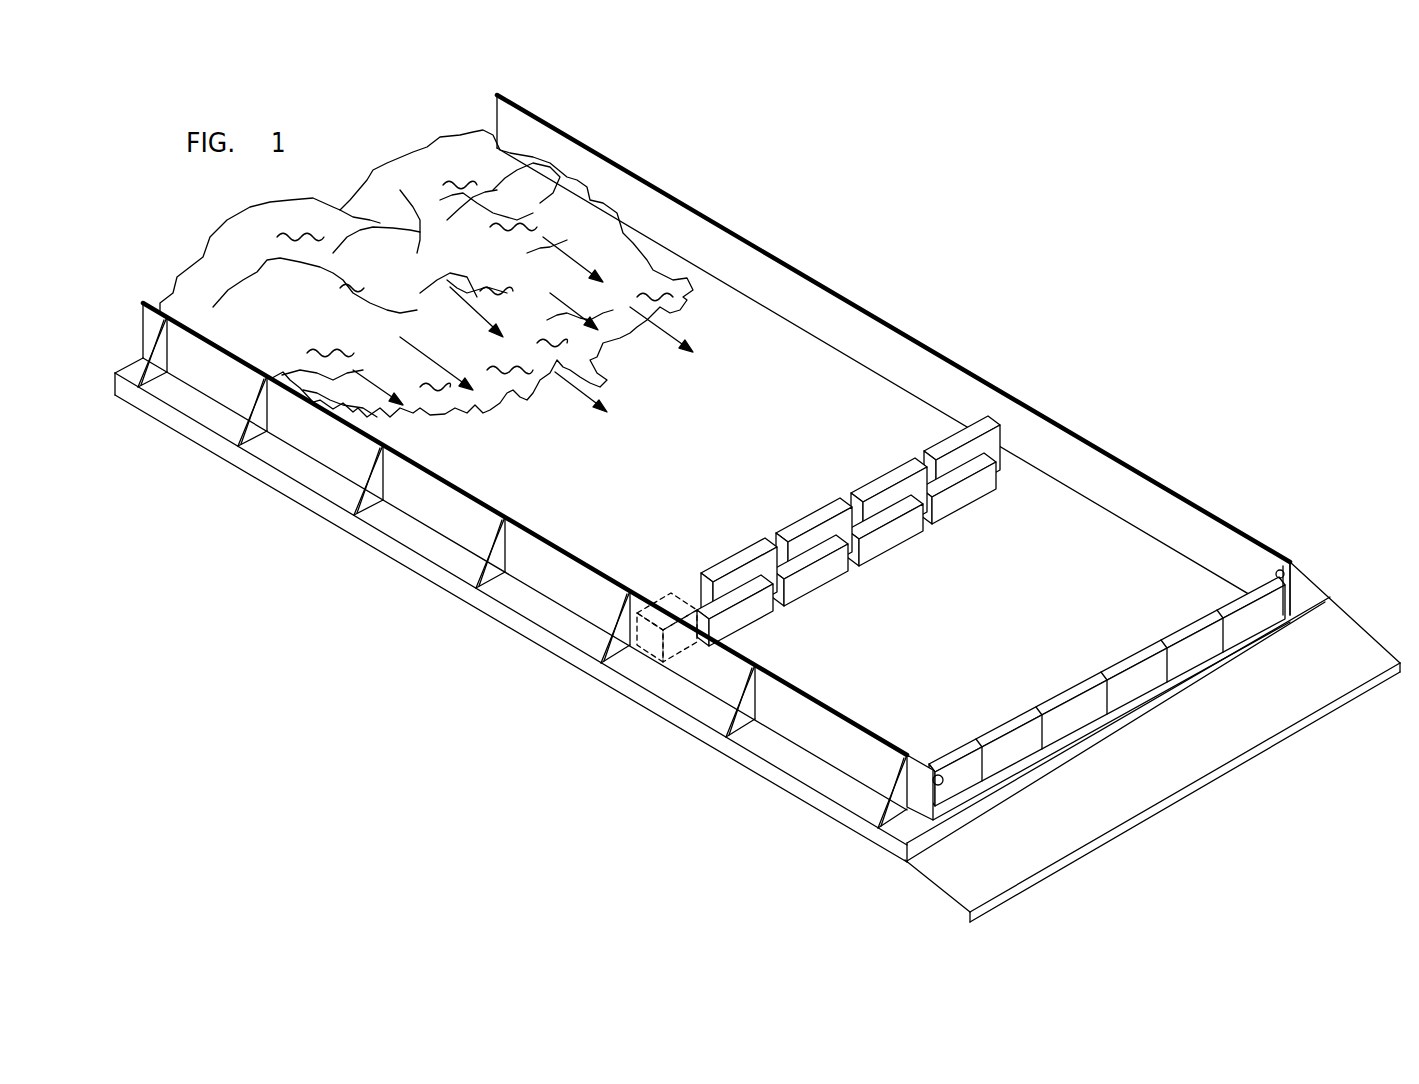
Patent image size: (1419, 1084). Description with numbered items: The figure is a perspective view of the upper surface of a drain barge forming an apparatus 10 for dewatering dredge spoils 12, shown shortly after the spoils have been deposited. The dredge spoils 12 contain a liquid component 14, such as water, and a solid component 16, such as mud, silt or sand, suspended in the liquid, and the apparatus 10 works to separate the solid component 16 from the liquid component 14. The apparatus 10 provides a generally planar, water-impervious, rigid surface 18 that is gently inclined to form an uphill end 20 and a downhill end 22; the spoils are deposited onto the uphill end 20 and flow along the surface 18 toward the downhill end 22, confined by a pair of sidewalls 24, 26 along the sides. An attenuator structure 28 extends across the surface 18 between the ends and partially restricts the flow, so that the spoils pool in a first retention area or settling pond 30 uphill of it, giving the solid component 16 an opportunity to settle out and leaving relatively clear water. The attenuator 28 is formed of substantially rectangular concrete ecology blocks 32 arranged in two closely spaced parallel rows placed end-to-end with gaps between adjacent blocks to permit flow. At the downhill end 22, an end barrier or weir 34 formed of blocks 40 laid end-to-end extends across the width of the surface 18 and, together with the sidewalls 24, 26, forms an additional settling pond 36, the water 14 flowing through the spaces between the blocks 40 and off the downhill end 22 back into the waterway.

The apparatus 10 is at (743, 508).
The dredge spoils 12 is at (426, 257).
The liquid component 14 is at (647, 285).
The solid component 16 is at (530, 210).
The surface 18 is at (698, 447).
The uphill end 20 is at (128, 367).
The downhill end 22 is at (708, 594).
The sidewall 24 is at (433, 503).
The sidewall 26 is at (825, 288).
The attenuator structure 28 is at (841, 496).
The first retention area or settling pond 30 is at (838, 390).
The ecology blocks 32 is at (730, 558).
The end barrier or weir 34 is at (1253, 572).
The additional settling pond 36 is at (1093, 533).
The blocks 40 is at (1137, 683).